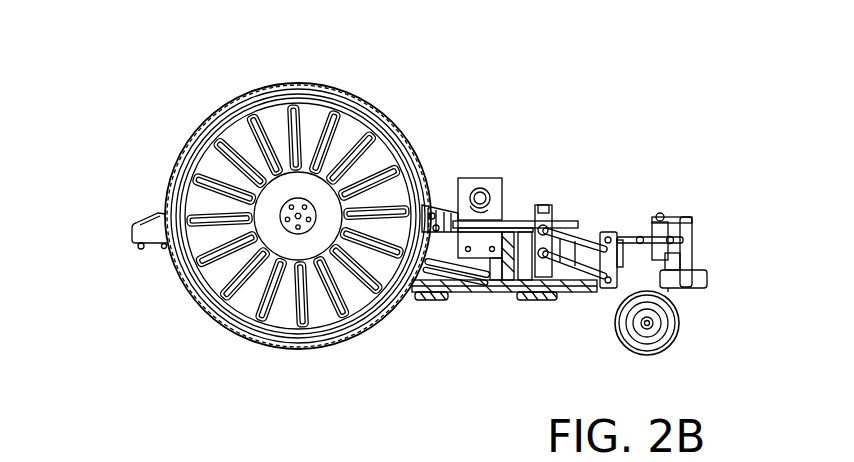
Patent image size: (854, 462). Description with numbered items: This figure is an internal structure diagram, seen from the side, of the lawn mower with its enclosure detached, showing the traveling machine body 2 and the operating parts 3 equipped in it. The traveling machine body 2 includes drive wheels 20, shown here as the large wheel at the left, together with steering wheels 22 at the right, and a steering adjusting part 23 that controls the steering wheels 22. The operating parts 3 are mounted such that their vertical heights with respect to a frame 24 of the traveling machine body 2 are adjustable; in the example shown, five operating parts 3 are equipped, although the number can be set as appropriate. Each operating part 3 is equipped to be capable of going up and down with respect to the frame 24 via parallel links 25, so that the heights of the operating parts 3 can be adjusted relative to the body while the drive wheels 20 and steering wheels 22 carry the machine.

The drive wheels 20 is at (283, 81).
The traveling machine body 2 is at (128, 230).
The operating parts 3 is at (427, 312).
The parallel links 25 is at (580, 240).
The frame 24 is at (623, 237).
The steering adjusting part 23 is at (680, 268).
The steering wheels 22 is at (677, 317).